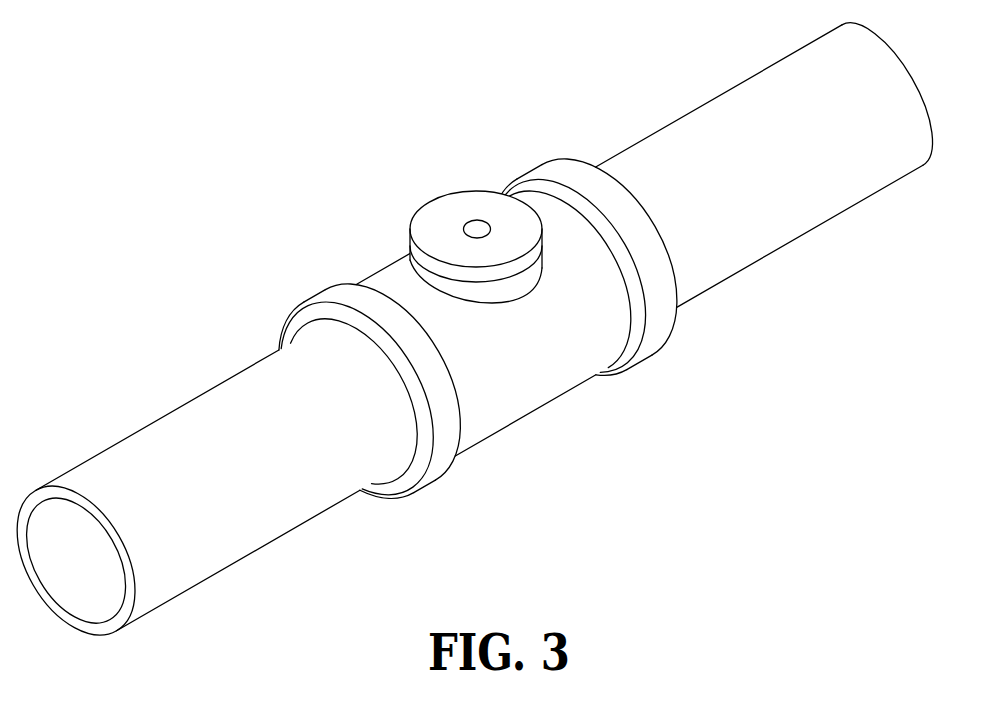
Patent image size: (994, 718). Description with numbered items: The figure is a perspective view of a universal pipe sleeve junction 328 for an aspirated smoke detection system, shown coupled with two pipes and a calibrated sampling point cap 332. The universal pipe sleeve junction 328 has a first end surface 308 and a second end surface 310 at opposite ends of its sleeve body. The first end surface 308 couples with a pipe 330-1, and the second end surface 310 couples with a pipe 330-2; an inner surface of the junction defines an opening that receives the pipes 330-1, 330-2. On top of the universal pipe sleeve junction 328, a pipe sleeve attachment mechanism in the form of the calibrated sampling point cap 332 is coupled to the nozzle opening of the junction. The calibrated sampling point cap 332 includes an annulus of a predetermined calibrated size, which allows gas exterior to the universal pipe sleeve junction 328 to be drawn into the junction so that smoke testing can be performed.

The first end surface 308 is at (290, 327).
The second end surface 310 is at (583, 159).
The universal pipe sleeve junction 328 is at (391, 258).
The pipe 330-1 is at (256, 528).
The pipe 330-2 is at (793, 230).
The calibrated sampling point cap 332 is at (472, 200).